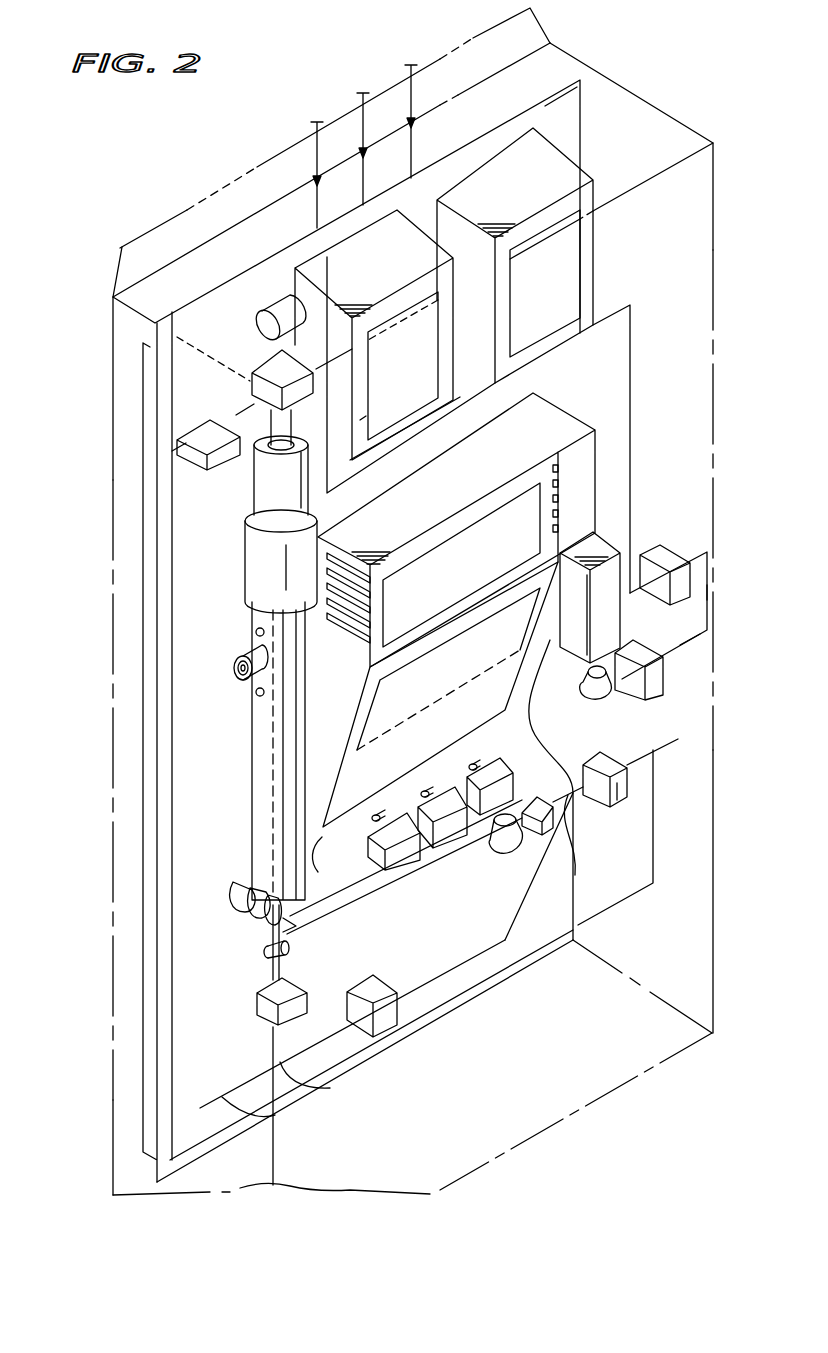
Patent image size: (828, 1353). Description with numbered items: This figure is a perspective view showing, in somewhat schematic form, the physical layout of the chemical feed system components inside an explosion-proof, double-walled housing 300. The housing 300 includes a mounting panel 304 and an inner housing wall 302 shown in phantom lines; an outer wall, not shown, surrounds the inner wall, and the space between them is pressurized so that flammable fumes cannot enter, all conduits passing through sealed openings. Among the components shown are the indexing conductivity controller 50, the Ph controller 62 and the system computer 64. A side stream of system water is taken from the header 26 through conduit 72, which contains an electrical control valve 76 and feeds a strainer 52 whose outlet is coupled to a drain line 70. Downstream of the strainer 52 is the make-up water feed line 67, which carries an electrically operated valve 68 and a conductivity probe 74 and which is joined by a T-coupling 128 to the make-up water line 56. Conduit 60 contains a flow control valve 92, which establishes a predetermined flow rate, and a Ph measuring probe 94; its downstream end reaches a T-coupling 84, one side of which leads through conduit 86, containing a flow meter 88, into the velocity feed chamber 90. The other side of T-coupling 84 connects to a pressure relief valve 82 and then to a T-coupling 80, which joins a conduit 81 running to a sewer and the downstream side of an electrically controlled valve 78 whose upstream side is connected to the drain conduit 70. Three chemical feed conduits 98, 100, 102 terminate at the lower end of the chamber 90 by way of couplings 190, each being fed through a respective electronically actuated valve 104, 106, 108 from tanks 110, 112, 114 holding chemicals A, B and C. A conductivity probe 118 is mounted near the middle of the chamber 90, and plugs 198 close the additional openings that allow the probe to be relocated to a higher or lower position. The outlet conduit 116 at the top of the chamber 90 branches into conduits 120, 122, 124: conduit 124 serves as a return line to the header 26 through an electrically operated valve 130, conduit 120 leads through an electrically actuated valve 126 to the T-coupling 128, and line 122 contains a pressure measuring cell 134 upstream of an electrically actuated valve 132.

The double-walled housing 300 is at (645, 150).
The inner housing wall 302 is at (593, 62).
The mounting panel 304 is at (563, 118).
The header 26 is at (172, 451).
The make-up water line 56 is at (709, 588).
The T-coupling 128 is at (709, 593).
The make-up water feed line 67 is at (690, 647).
The tank 110 is at (411, 83).
The chemical tank 112 is at (363, 117).
The tank 114 is at (317, 157).
The indexing conductivity controller 50 is at (393, 290).
The conduit 120 is at (366, 393).
The outlet conduit 116 is at (364, 419).
The Ph controller 62 is at (537, 206).
The system computer 64 is at (480, 576).
The electrically actuated valve 126 is at (667, 560).
The electrically operated valve 68 is at (653, 682).
The conductivity probe 74 is at (588, 703).
The pressure measuring cell 134 is at (263, 333).
The electrically actuated valve 132 is at (263, 367).
The conduit 122 is at (273, 408).
The conduit 124 is at (277, 427).
The electrically operated valve 130 is at (197, 463).
The velocity feed chamber 90 is at (265, 737).
The plug 198 is at (255, 632).
The conductivity probe 118 is at (235, 677).
The electronically actuated valve 104 is at (495, 768).
The electronically actuated valve 106 is at (447, 800).
The electronically actuated valve 108 is at (403, 820).
The chemical feed conduit 98 is at (317, 870).
The chemical feed conduit 102 is at (363, 868).
The chemical feed conduit 100 is at (440, 847).
The conduit 60 is at (390, 908).
The flow control valve 92 is at (543, 800).
The Ph measuring probe 94 is at (510, 840).
The conduit 72 is at (590, 797).
The electrical control valve 76 is at (620, 795).
The strainer 52 is at (575, 845).
The drain line 70 is at (518, 907).
The coupling 190 is at (247, 910).
The conduit 86 is at (290, 925).
The T-coupling 84 is at (283, 968).
The flow meter 88 is at (267, 952).
The pressure relief valve 82 is at (295, 1008).
The electrically controlled valve 78 is at (383, 988).
The T-coupling 80 is at (313, 1078).
The conduit 81 is at (275, 1114).